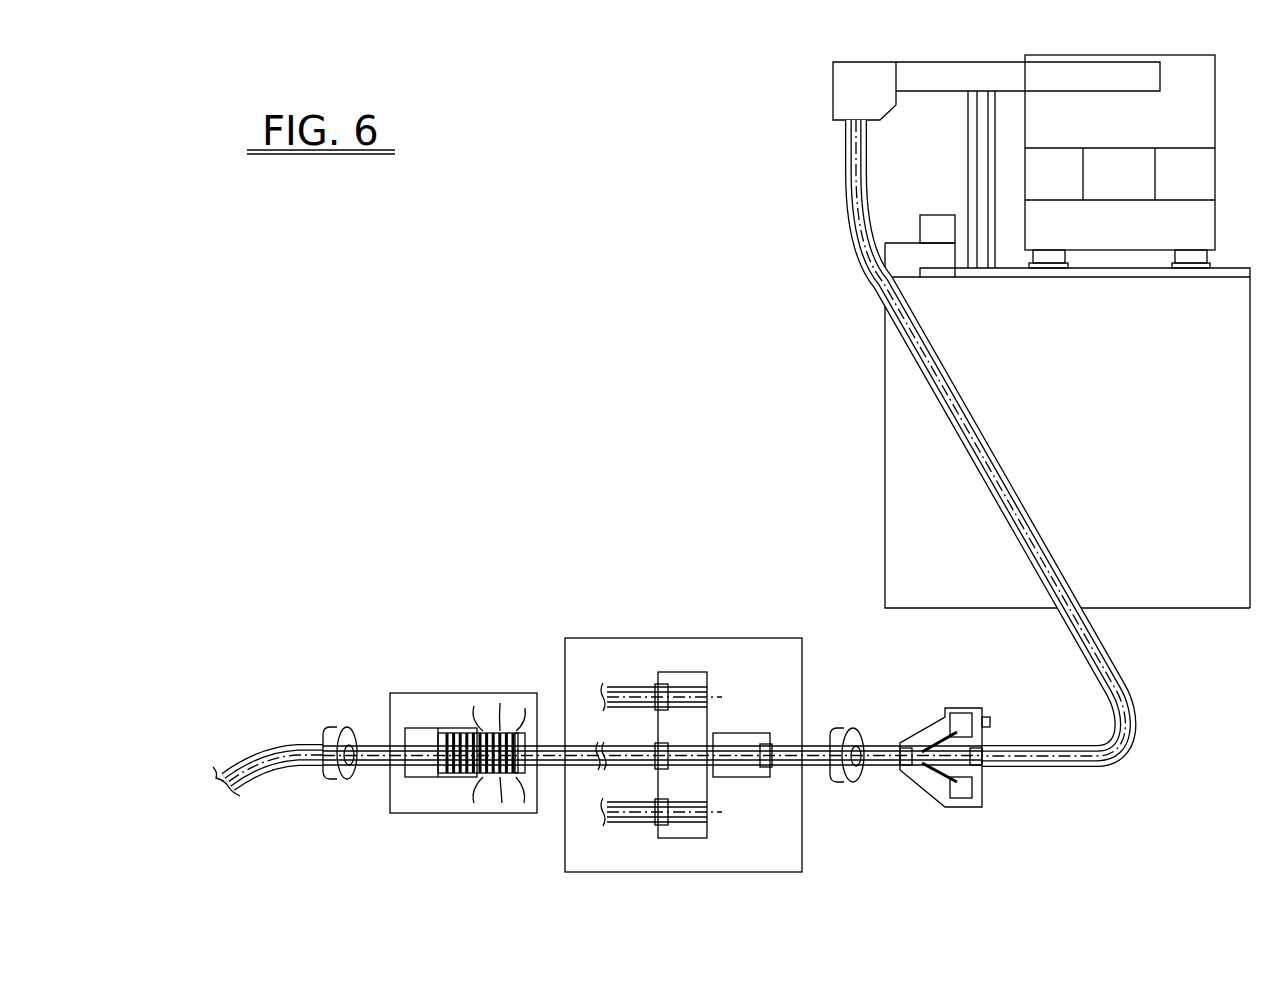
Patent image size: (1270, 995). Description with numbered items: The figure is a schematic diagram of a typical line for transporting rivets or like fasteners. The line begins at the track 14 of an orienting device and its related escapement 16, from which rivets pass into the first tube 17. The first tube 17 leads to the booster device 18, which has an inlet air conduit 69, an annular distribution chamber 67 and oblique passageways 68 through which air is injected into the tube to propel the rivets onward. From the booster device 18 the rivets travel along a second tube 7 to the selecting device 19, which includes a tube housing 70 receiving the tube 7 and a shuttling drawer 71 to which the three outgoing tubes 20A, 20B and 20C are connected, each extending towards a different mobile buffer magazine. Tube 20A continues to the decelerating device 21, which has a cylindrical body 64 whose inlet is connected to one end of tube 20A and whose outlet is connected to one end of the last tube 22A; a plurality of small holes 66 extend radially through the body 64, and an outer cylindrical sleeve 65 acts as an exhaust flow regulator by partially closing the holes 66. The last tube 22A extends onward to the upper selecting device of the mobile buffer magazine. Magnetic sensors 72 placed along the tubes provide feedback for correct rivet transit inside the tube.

The second tube 7 is at (882, 745).
The track 14 is at (1025, 82).
The escapement 16 is at (843, 92).
The first tube 17 is at (947, 387).
The booster device 18 is at (930, 782).
The selecting device 19 is at (785, 862).
The outgoing tube 20A is at (628, 752).
The outgoing tube 20B is at (638, 810).
The outgoing tube 20C is at (617, 695).
The decelerating device 21 is at (405, 808).
The last tube 22A is at (272, 747).
The cylindrical body 64 is at (532, 812).
The outer cylindrical sleeve 65 is at (413, 730).
The small holes 66 is at (515, 742).
The annular distribution chamber 67 is at (955, 720).
The oblique passageways 68 is at (938, 738).
The inlet air conduit 69 is at (990, 718).
The tube housing 70 is at (743, 742).
The shuttling drawer 71 is at (685, 677).
The magnetic sensors 72 is at (335, 775).